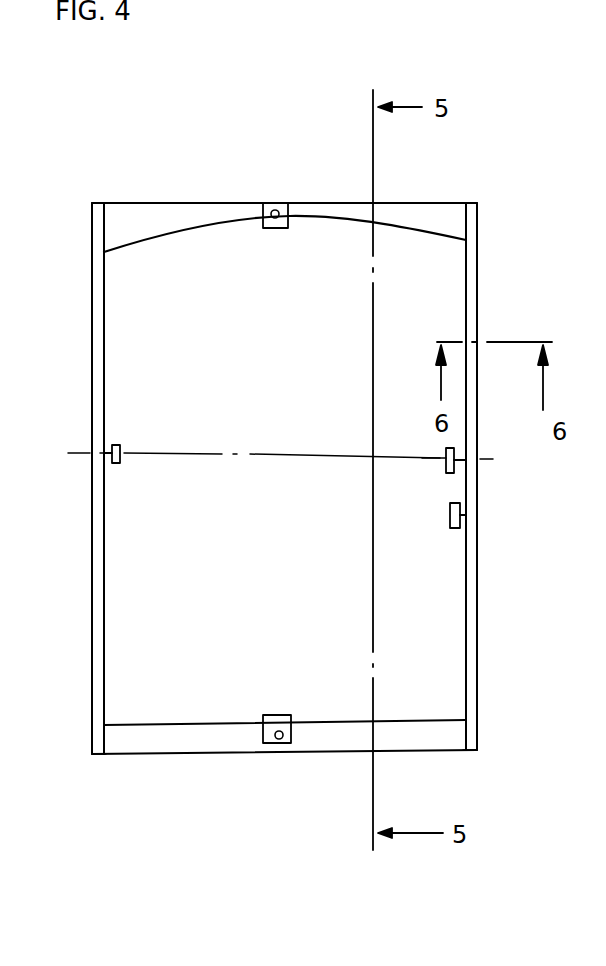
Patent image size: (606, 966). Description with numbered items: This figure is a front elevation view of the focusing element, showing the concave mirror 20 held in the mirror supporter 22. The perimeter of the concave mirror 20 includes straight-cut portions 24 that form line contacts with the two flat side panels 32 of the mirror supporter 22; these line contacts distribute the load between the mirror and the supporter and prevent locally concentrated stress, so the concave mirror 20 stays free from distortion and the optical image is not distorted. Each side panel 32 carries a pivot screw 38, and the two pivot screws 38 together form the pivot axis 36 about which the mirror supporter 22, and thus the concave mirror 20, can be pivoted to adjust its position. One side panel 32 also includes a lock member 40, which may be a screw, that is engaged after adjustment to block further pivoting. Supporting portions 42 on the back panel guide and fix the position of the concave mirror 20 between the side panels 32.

The concave mirror 20 is at (427, 232).
The mirror supporter 22 is at (477, 228).
The straight-cut portion 24 is at (466, 284).
The side panel 32 is at (92, 743).
The pivot axis 36 is at (422, 462).
The pivot screw 38 is at (118, 462).
The lock member 40 is at (450, 517).
The supporting portion 42 is at (289, 205).